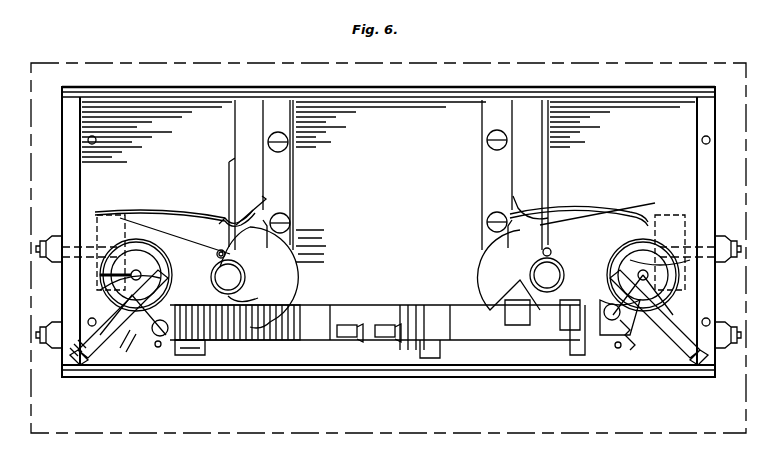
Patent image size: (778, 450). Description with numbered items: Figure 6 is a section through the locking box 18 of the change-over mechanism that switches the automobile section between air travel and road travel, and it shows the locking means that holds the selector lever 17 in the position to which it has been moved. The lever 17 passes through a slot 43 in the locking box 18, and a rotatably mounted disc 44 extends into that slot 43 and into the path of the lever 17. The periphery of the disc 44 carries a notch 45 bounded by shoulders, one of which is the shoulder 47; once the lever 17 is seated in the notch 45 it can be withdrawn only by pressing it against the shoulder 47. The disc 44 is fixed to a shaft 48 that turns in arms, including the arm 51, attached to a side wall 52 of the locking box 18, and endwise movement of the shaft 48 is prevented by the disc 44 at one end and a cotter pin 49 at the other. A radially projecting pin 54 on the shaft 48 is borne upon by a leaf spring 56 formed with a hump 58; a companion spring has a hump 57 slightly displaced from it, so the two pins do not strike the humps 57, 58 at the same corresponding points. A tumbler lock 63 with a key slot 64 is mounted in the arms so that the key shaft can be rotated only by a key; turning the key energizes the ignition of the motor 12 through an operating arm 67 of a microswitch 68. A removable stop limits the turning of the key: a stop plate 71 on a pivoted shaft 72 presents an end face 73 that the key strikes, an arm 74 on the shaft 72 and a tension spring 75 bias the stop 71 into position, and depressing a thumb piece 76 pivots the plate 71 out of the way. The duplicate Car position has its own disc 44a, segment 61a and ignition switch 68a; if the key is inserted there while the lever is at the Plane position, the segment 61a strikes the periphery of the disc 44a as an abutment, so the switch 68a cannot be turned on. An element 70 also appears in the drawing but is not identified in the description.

The motor 12 is at (320, 110).
The selector lever 17 is at (265, 355).
The locking box 18 is at (172, 87).
The slot 43 is at (310, 360).
The rotatably mounted disc 44 is at (292, 277).
The disc 44a is at (490, 280).
The notch 45 is at (270, 300).
The shoulder 47 is at (237, 322).
The shaft 48 is at (297, 252).
The cotter pin 49 is at (215, 248).
The arm 51 is at (172, 232).
The side wall 52 is at (85, 202).
The pin 54 is at (290, 206).
The leaf spring 56 is at (245, 212).
The hump 57 is at (220, 210).
The hump 58 is at (225, 212).
The segment 61a is at (632, 210).
The tumbler lock 63 is at (140, 255).
The key slot 64 is at (86, 290).
The operating arm 67 is at (228, 170).
The microswitch 68 is at (283, 178).
The ignition switch 68a is at (492, 172).
The roller 70 is at (247, 264).
The stop plate 71 is at (165, 300).
The shaft 72 is at (160, 336).
The end face 73 is at (160, 280).
The arm 74 is at (128, 335).
The tension spring 75 is at (112, 330).
The thumb piece 76 is at (75, 358).